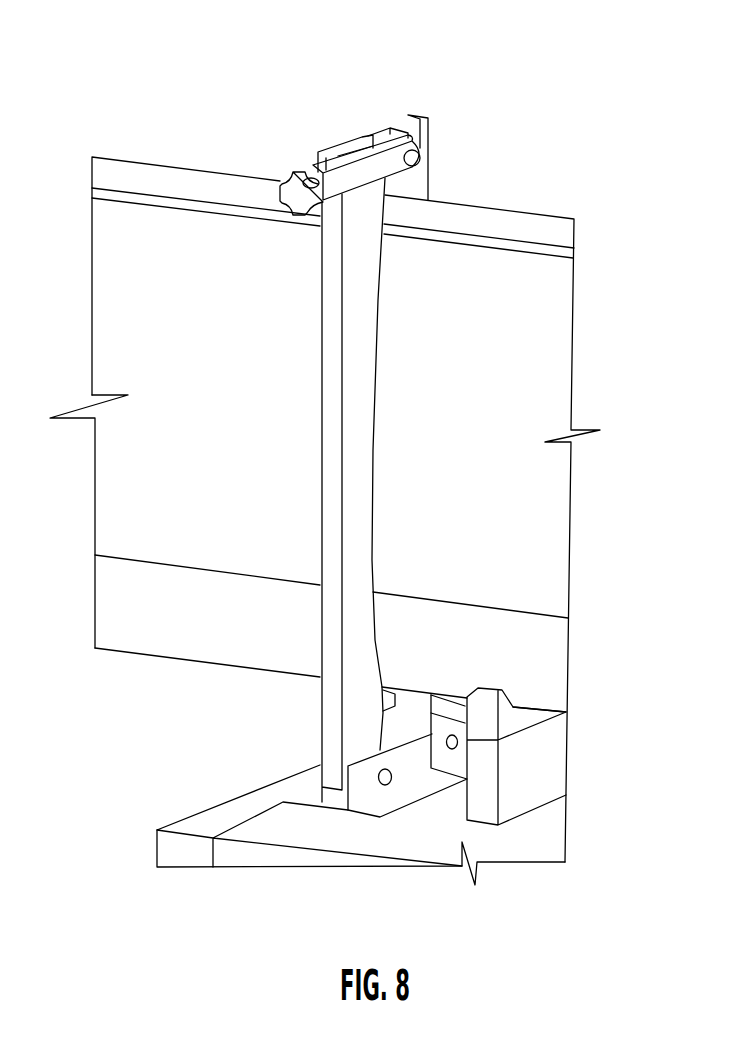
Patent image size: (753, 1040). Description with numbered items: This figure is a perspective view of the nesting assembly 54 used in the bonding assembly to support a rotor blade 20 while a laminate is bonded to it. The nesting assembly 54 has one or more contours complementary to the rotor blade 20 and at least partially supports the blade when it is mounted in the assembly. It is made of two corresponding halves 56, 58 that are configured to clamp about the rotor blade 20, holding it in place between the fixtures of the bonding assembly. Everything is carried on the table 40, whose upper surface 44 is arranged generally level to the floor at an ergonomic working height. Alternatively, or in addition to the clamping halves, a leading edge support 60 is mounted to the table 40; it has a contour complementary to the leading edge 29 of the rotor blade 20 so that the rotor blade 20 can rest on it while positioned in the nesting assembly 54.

The rotor blade 20 is at (525, 475).
The leading edge 29 is at (160, 658).
The table 40 is at (193, 850).
The upper surface 44 is at (382, 838).
The nesting assembly 54 is at (500, 108).
The first half of nesting assembly 56 is at (352, 360).
The second half of nesting assembly 58 is at (429, 186).
The leading edge support 60 is at (533, 748).